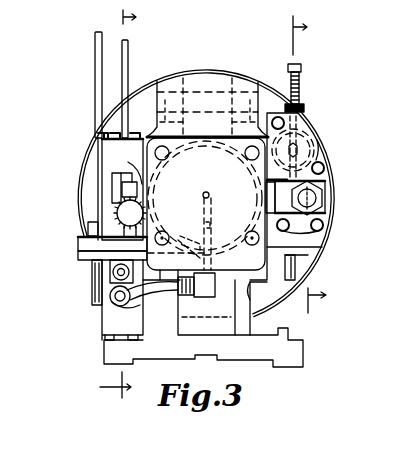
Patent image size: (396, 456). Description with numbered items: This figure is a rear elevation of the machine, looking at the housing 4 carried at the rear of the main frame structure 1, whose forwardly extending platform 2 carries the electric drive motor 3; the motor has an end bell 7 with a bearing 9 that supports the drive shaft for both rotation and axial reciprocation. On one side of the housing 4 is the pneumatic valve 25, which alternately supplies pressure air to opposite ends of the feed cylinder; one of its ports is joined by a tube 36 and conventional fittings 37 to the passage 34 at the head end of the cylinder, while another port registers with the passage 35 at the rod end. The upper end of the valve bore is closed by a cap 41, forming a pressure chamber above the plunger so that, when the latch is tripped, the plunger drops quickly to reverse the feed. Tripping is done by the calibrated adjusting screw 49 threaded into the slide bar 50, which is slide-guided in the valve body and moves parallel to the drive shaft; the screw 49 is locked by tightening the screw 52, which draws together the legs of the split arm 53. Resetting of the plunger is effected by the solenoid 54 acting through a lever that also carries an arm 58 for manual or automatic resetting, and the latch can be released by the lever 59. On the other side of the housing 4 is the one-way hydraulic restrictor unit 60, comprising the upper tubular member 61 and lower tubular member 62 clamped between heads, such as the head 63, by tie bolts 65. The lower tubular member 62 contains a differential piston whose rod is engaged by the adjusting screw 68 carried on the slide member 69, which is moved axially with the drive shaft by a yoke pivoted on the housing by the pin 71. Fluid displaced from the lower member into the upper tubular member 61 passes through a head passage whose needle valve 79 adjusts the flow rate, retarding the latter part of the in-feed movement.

The main frame structure 1 is at (103, 350).
The platform 2 is at (290, 347).
The electric drive motor 3 is at (147, 84).
The housing 4 is at (211, 76).
The end bell 7 is at (114, 204).
The bearing 9 is at (309, 166).
The pneumatic valve 25 is at (98, 160).
The passage 34 is at (212, 201).
The passage 35 is at (195, 244).
The tube 36 is at (138, 309).
The fittings 37 is at (110, 301).
The cap 41 is at (99, 132).
The adjusting screw 49 is at (116, 220).
The slide bar 50 is at (126, 167).
The screw 52 is at (122, 240).
The split arm 53 is at (123, 190).
The solenoid 54 is at (92, 281).
The arm 58 is at (128, 54).
The lever 59 is at (94, 81).
The hydraulic restrictor unit 60 is at (309, 252).
The upper tubular member 61 is at (312, 132).
The lower tubular member 62 is at (325, 206).
The head 63 is at (320, 151).
The tie bolts 65 is at (300, 113).
The adjusting screw 68 is at (314, 196).
The slide member 69 is at (264, 195).
The pin 71 is at (189, 72).
The needle valve 79 is at (301, 82).